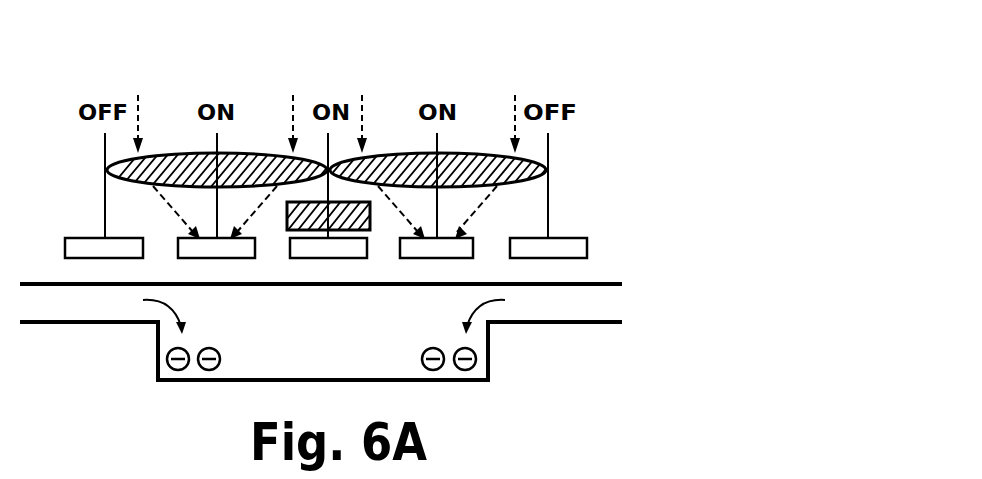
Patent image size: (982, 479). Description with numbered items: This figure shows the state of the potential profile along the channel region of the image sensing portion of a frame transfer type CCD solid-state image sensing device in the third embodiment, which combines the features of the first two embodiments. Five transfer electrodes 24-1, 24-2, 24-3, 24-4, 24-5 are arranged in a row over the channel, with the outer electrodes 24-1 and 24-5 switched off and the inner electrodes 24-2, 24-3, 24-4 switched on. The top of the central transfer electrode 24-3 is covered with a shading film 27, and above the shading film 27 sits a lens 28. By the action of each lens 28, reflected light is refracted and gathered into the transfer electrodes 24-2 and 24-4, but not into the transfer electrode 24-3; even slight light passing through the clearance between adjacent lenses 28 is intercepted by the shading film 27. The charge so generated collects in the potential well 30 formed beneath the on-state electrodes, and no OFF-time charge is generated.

The shading film 27 is at (286, 202).
The lens 28 is at (165, 156).
The transfer electrode 24-1 is at (94, 195).
The transfer electrode 24-2 is at (216, 208).
The transfer electrode 24-3 is at (328, 208).
The transfer electrode 24-4 is at (436, 208).
The transfer electrode 24-5 is at (558, 195).
The potential well 30 is at (478, 352).